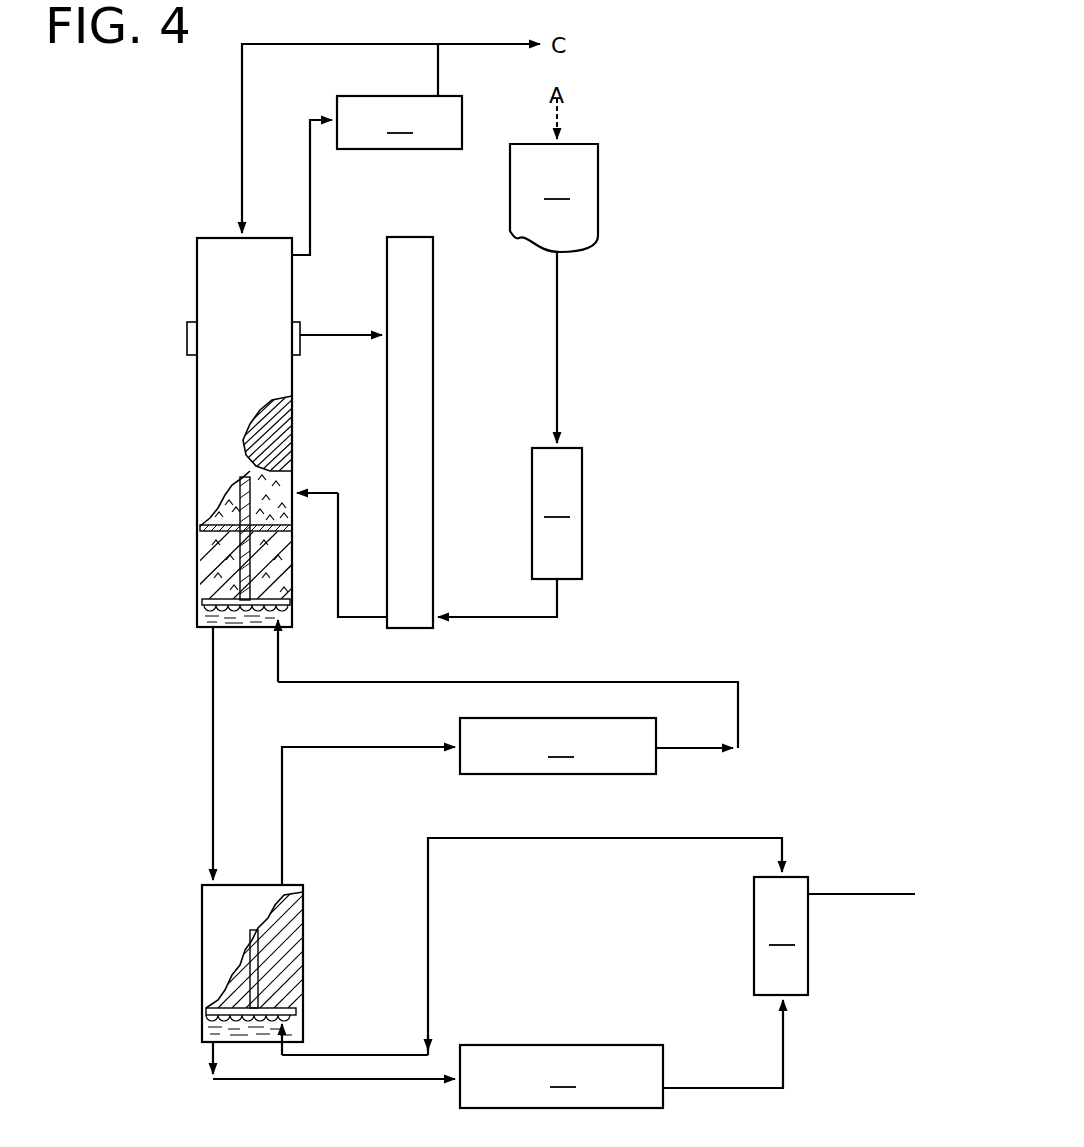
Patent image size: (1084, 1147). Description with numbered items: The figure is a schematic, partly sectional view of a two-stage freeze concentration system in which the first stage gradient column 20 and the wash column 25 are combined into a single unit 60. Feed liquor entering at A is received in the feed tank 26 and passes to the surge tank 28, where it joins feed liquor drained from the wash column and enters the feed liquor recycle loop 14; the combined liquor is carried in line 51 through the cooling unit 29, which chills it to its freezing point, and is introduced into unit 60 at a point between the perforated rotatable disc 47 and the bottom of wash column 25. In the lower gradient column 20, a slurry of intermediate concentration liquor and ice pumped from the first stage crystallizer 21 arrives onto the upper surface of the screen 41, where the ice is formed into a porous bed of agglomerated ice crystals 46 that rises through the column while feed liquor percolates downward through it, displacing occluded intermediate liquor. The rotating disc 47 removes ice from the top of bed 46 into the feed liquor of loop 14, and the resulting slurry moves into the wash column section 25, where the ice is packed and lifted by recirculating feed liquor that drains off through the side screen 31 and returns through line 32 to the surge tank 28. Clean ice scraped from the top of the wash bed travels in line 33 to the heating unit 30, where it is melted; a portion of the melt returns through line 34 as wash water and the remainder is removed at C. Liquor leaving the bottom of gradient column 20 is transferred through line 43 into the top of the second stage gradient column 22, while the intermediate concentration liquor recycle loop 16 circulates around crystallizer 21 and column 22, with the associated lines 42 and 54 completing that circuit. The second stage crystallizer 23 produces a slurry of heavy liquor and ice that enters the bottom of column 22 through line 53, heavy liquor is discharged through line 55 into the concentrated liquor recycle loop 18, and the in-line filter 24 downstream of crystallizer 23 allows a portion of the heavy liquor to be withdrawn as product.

The single unit 60 is at (181, 432).
The wash column 25 is at (197, 288).
The side screen 31 is at (297, 350).
The perforated rotatable disc 47 is at (200, 527).
The first stage gradient column 20 is at (197, 557).
The porous bed of agglomerated ice crystals 46 is at (205, 583).
The line 34 is at (243, 172).
The line 33 is at (310, 200).
The heating unit 30 is at (399, 122).
The line 32 is at (328, 334).
The surge tank 28 is at (434, 365).
The feed tank 26 is at (554, 175).
The cooling unit 29 is at (510, 434).
The line 51 is at (358, 625).
The feed liquor recycle loop 14 is at (339, 478).
The screen 41 is at (285, 625).
The line 42 is at (540, 681).
The intermediate concentration liquor recycle loop 16 is at (752, 713).
The first stage crystallizer 21 is at (558, 746).
The line 54 is at (349, 750).
The line 43 is at (211, 795).
The concentrated liquor recycle loop 18 is at (794, 852).
The line 53 is at (338, 1056).
The second stage gradient column 22 is at (202, 950).
The line 55 is at (250, 1080).
The second stage crystallizer 23 is at (561, 1076).
The in-line filter 24 is at (789, 982).